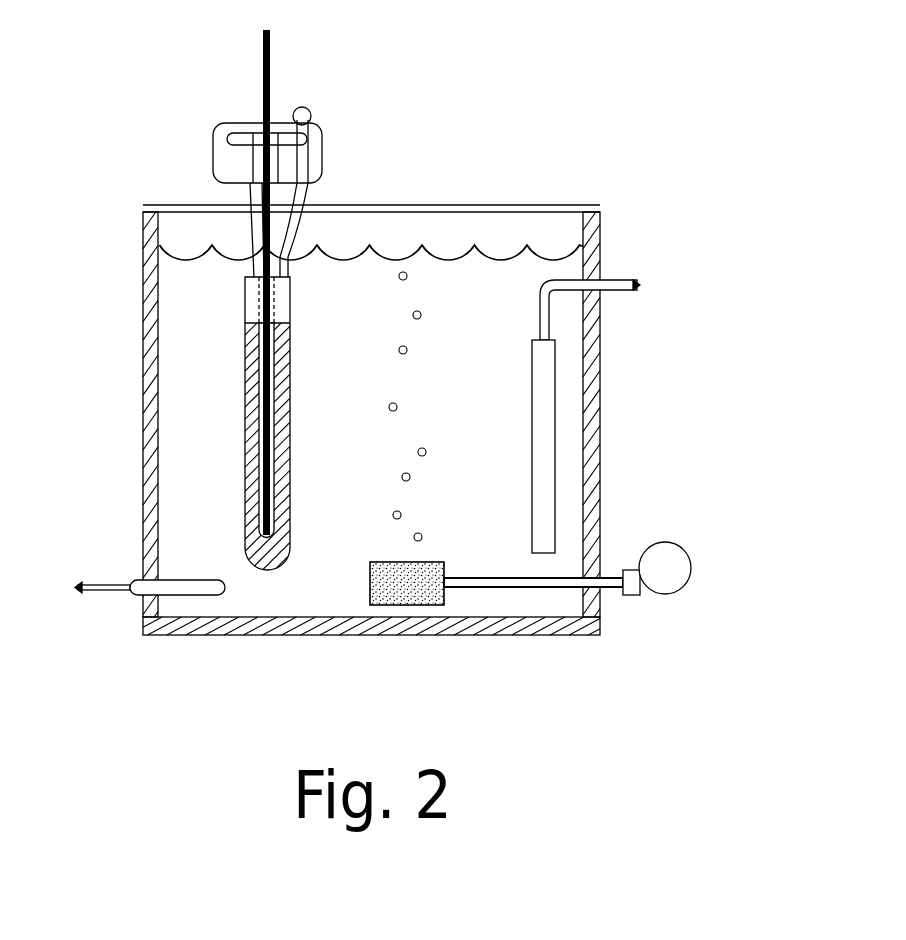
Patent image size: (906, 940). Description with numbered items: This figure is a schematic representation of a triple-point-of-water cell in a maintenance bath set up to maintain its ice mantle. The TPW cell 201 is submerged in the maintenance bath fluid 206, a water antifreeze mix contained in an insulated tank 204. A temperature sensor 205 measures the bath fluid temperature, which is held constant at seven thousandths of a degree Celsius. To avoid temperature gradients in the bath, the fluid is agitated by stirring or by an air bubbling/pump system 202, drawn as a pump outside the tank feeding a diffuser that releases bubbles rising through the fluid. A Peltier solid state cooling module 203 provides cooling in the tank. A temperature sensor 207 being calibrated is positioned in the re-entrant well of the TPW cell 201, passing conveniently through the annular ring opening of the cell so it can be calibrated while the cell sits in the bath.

The TPW cell 201 is at (220, 92).
The air bubbling/pump system 202 is at (670, 556).
The Peltier solid state cooling module 203 is at (542, 402).
The insulated tank 204 is at (602, 495).
The temperature sensor 205 is at (133, 580).
The maintenance bath fluid 206 is at (308, 596).
The temperature sensor 207 is at (270, 63).